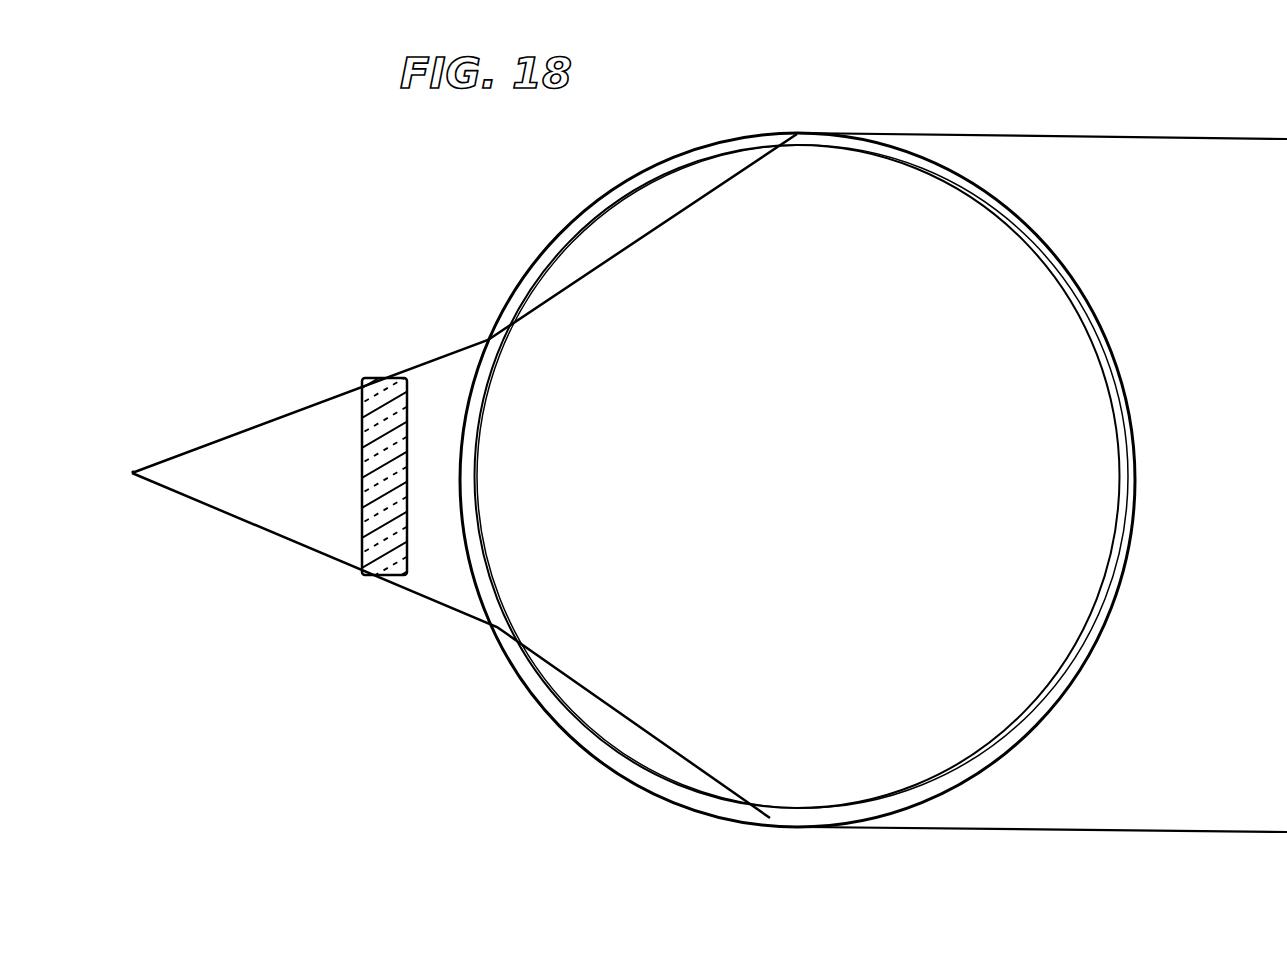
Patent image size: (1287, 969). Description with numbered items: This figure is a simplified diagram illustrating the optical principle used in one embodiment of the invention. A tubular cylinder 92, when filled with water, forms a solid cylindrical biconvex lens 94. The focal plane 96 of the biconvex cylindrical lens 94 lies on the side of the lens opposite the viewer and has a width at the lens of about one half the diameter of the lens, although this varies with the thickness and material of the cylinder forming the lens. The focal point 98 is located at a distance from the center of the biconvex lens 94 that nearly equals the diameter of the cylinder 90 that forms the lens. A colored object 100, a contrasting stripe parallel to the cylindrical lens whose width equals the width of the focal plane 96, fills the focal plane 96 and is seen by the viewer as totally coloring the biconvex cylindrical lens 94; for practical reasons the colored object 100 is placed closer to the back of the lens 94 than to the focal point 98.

The cylinder 90 is at (1100, 478).
The tubular cylinder 92 is at (1077, 287).
The biconvex cylindrical lens 94 is at (860, 230).
The focal plane 96 is at (310, 433).
The focal point 98 is at (131, 470).
The colored object 100 is at (386, 384).